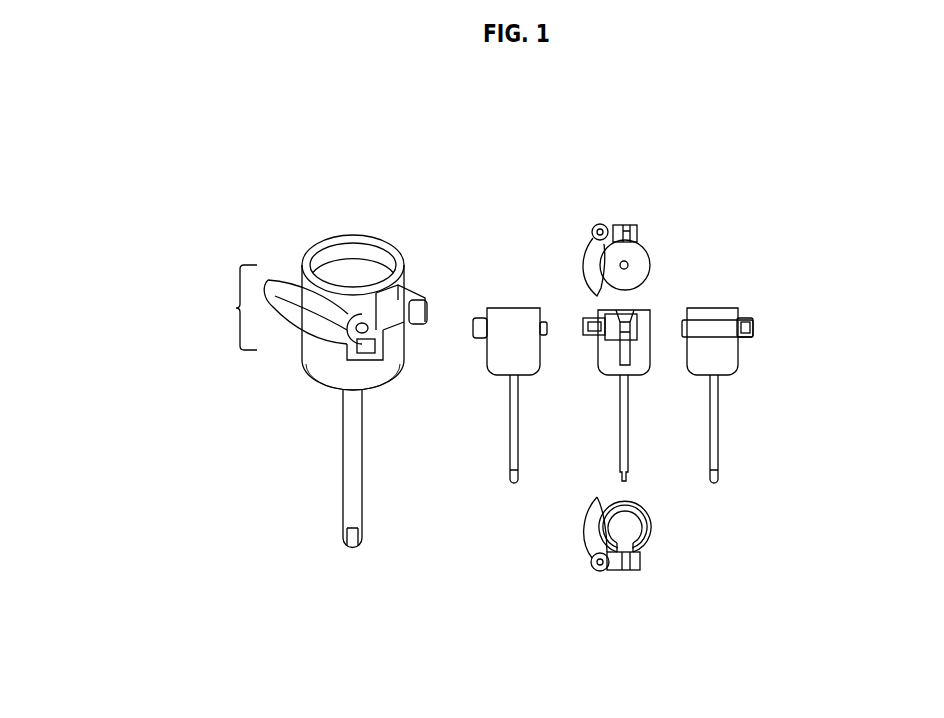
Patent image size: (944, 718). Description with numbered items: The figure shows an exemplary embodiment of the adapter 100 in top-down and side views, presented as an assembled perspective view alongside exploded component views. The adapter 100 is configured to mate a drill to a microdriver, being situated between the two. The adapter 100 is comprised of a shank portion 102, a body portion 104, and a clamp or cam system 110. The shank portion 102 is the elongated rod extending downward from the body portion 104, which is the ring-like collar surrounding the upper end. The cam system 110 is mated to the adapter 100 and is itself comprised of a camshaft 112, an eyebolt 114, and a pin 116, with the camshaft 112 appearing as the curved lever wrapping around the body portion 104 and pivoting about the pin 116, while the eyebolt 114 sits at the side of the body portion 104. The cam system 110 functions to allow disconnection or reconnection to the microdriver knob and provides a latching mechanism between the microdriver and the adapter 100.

The adapter 100 is at (232, 238).
The shank portion 102 is at (343, 512).
The body portion 104 is at (360, 235).
The cam system 110 is at (233, 308).
The camshaft 112 is at (303, 327).
The eyebolt 114 is at (400, 312).
The pin 116 is at (605, 570).